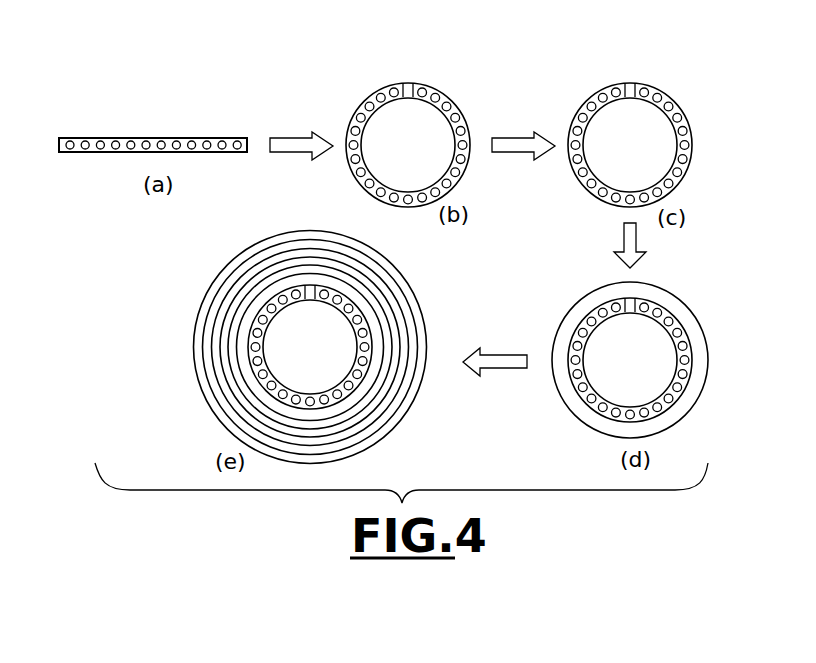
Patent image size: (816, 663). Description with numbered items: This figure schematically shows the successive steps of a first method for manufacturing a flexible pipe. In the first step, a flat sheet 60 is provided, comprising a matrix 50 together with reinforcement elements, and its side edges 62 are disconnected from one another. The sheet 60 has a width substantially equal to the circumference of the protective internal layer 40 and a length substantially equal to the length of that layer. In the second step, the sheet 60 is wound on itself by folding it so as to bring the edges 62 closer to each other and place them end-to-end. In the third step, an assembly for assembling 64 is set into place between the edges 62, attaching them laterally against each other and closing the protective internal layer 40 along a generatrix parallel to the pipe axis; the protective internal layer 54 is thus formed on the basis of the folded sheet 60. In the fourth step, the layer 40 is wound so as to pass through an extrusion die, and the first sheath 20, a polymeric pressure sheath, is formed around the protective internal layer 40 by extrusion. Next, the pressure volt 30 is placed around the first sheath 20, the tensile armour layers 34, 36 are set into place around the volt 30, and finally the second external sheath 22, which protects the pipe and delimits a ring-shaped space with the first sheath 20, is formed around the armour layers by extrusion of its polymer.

The first sheath 20 is at (685, 313).
The second external sheath 22 is at (208, 398).
The pressure volt 30 is at (247, 292).
The tensile armour layer 34 is at (220, 328).
The tensile armour layer 36 is at (210, 358).
The protective internal layer 40 is at (355, 97).
The matrix 50 is at (95, 153).
The protective internal layer 54 is at (102, 140).
The sheet 60 is at (318, 149).
The side edges 62 is at (247, 142).
The assembly for assembling 64 is at (635, 82).